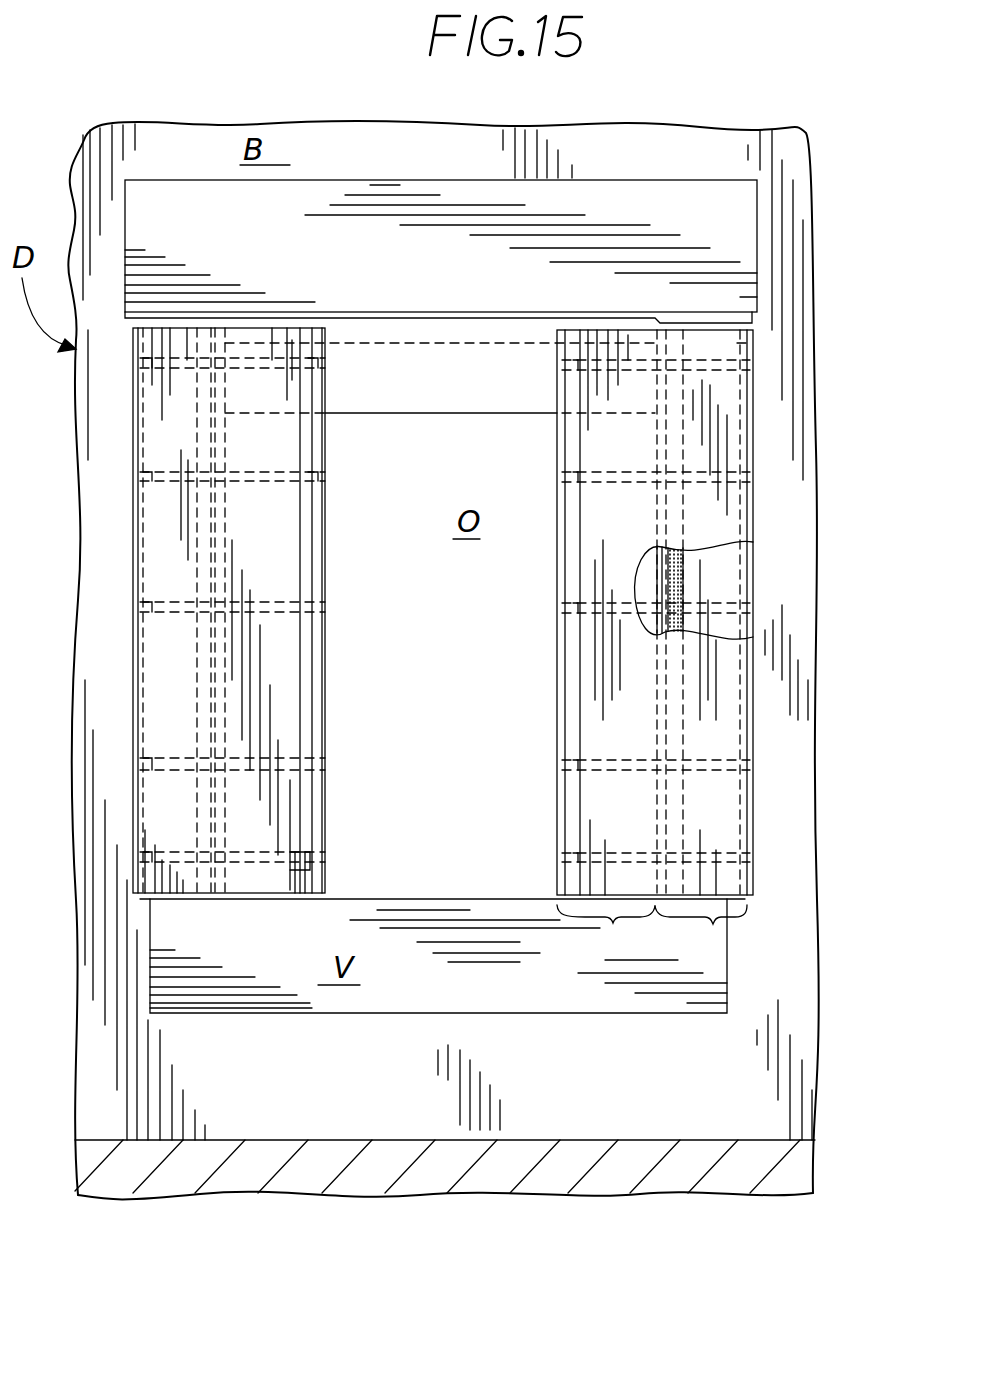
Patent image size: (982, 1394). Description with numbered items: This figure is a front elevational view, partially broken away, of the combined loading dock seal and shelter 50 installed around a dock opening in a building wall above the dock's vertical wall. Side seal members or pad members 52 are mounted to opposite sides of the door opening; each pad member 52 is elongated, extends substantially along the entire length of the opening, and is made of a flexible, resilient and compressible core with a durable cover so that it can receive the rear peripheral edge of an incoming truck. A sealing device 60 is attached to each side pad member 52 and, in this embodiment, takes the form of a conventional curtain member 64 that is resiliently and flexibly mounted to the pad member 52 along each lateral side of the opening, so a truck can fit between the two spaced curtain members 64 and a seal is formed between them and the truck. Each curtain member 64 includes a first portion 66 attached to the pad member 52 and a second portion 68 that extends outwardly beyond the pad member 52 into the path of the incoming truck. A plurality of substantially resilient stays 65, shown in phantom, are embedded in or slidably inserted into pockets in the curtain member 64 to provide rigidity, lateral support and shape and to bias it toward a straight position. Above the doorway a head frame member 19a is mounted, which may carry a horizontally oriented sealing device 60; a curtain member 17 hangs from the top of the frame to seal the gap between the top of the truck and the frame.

The head frame member 19a is at (740, 230).
The combined loading dock seal and shelter 50 is at (843, 338).
The curtain member 17 is at (492, 397).
The sealing device 60 is at (130, 662).
The curtain member 64 is at (160, 563).
The side pad member 52 is at (165, 440).
The stays 65 is at (176, 767).
The second portion 68 is at (606, 930).
The first portion 66 is at (701, 930).